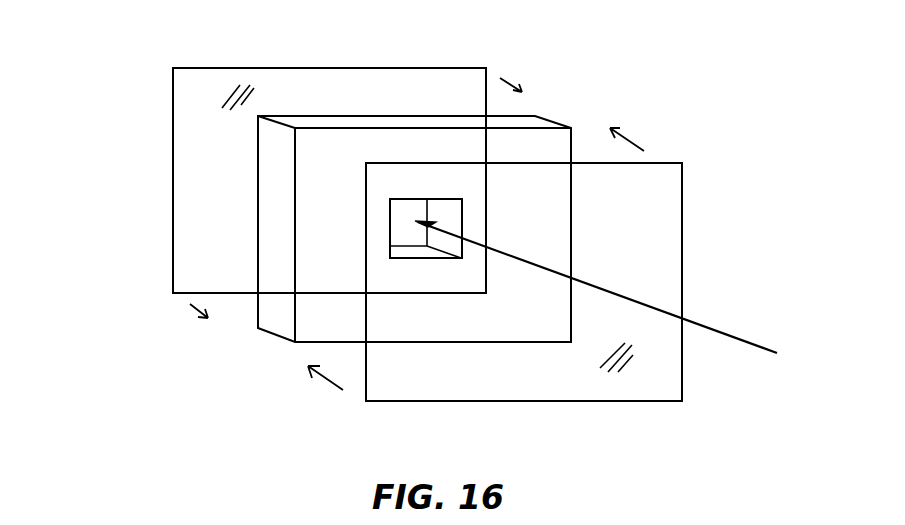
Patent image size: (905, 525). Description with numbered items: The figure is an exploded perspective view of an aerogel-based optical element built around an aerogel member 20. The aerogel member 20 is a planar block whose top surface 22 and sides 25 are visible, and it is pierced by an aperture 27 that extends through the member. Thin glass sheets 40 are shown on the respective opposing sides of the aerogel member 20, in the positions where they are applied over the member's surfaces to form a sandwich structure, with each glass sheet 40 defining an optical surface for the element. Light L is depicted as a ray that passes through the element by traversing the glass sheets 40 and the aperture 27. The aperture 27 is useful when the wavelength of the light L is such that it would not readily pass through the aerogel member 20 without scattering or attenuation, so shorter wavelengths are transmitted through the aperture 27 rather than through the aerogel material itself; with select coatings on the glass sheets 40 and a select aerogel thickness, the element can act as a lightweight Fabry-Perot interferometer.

The aerogel member 20 is at (245, 146).
The top surface 22 is at (305, 172).
The sides 25 is at (273, 211).
The aperture 27 is at (440, 225).
The glass sheets 40 is at (460, 68).
The light L is at (748, 341).